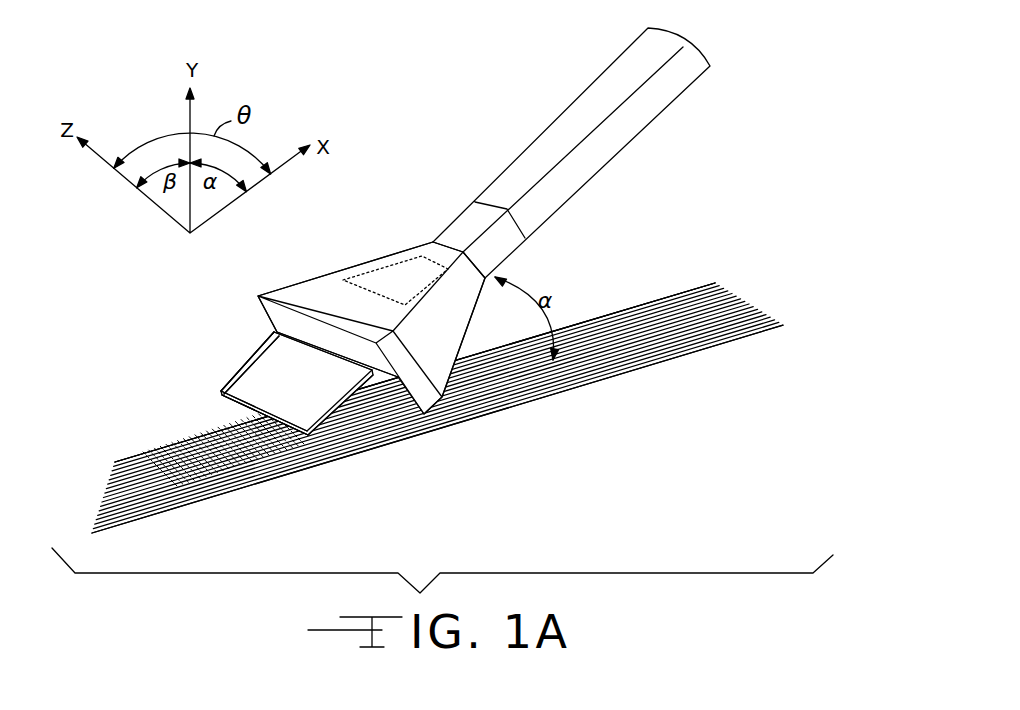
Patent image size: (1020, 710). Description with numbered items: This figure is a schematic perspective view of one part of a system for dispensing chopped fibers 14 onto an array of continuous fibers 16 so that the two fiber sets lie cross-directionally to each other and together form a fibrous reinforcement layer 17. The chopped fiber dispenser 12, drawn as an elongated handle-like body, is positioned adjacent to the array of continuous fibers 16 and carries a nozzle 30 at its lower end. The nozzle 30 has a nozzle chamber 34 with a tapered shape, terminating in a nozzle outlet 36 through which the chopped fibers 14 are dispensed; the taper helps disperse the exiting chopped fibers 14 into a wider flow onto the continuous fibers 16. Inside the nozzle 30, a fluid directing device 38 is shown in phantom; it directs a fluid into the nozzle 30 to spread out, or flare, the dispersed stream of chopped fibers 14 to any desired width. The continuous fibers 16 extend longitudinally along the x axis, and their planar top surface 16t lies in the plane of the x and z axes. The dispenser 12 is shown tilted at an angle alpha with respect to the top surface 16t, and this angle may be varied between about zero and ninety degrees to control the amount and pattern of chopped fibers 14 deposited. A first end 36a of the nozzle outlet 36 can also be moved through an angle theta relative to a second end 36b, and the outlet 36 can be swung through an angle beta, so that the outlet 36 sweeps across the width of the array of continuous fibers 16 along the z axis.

The chopped fiber dispenser 12 is at (449, 222).
The chopped fibers 14 is at (218, 412).
The array of continuous fibers 16 is at (697, 350).
The top surface of the array of continuous fibers 16t is at (678, 312).
The fibrous reinforcement layer 17 is at (210, 478).
The nozzle 30 is at (318, 272).
The nozzle chamber 34 is at (245, 367).
The nozzle outlet 36 is at (258, 408).
The first end of the nozzle outlet 36a is at (213, 393).
The second end of the nozzle outlet 36b is at (337, 432).
The fluid directing device 38 is at (378, 266).